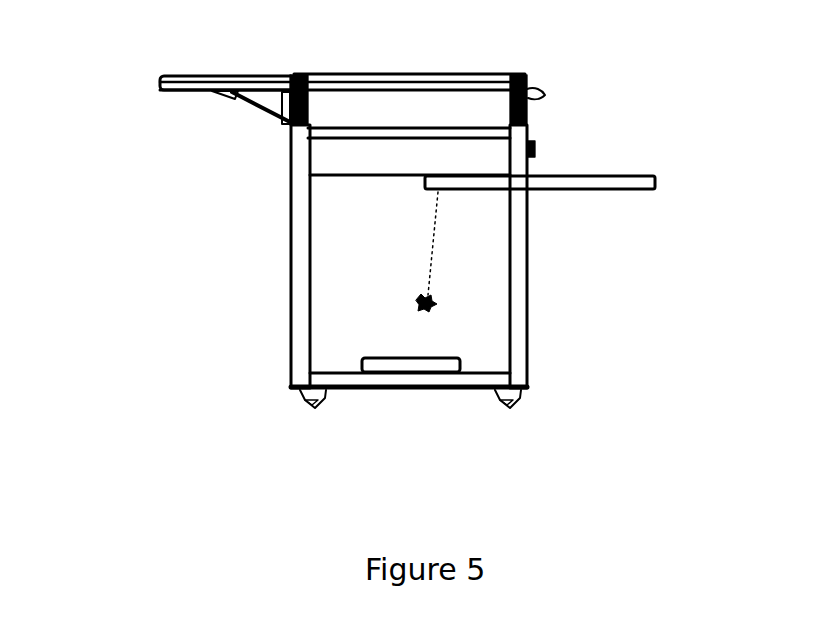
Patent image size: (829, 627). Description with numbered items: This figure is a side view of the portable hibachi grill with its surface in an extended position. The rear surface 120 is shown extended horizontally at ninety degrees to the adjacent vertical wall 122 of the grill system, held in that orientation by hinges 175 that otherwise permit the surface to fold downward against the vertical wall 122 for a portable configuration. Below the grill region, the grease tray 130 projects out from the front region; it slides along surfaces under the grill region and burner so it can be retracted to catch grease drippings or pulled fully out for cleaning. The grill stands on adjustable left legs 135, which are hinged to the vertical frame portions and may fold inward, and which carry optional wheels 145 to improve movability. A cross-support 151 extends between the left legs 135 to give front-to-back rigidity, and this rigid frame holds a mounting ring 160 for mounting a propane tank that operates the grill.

The rear surface 120 is at (195, 72).
The hinges 175 is at (264, 105).
The vertical wall 122 is at (340, 157).
The left legs 135 is at (197, 313).
The grease tray 130 is at (617, 178).
The cross-support 151 is at (342, 460).
The mounting ring 160 is at (443, 362).
The wheels 145 is at (512, 412).